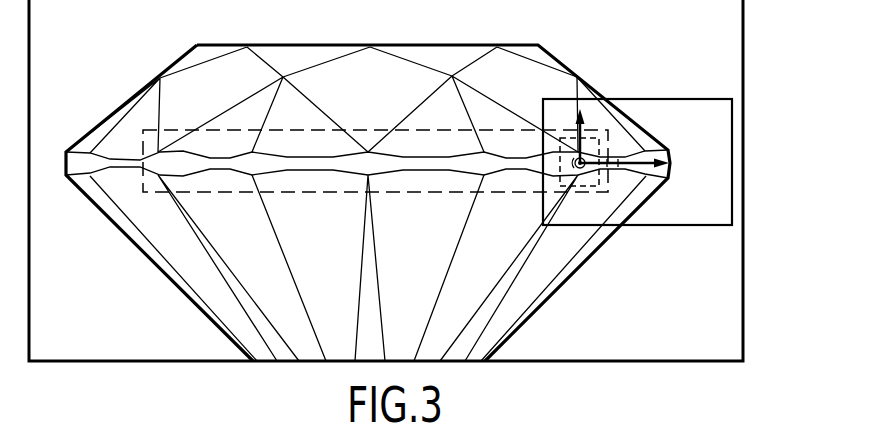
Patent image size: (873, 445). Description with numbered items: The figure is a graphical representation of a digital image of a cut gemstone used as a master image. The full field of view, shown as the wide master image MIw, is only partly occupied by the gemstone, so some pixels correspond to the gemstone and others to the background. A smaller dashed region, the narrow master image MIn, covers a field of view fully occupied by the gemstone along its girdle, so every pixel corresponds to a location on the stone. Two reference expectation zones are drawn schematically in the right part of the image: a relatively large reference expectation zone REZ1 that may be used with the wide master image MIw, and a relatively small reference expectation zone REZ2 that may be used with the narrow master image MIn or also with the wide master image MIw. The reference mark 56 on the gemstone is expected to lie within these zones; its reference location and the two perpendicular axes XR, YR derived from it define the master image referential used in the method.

The wide master image MIw is at (743, 6).
The narrow master image MIn is at (172, 130).
The reference expectation zone REZ1 is at (668, 99).
The reference expectation zone REZ2 is at (562, 137).
The reference axis XR is at (642, 164).
The reference axis YR is at (592, 133).
The reference mark 56 is at (581, 169).